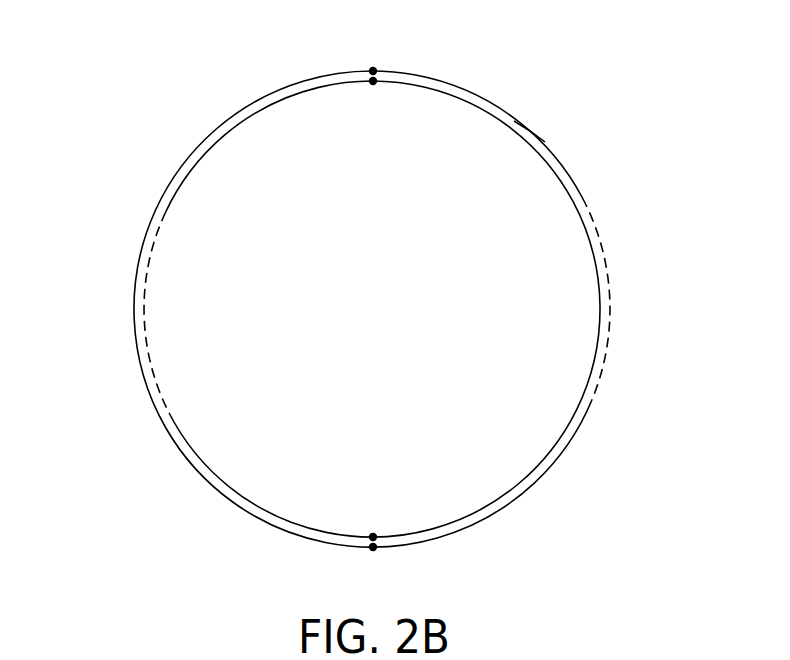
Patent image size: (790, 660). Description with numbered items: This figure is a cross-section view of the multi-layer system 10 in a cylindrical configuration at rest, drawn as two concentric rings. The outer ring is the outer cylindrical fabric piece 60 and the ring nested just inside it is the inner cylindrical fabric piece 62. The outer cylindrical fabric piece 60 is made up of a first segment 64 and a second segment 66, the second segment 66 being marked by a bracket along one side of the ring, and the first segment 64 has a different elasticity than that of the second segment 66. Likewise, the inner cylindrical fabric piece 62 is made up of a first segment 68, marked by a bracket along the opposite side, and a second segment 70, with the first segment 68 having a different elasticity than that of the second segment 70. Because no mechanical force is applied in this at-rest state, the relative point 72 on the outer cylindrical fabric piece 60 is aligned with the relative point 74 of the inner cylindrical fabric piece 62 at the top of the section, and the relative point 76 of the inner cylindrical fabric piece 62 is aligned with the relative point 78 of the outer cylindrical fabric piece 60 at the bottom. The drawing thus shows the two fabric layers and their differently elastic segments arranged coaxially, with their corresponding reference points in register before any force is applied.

The multi-layer system 10 is at (132, 96).
The outer cylindrical fabric piece 60 is at (305, 77).
The inner cylindrical fabric piece 62 is at (295, 98).
The first segment 64 is at (230, 118).
The second segment 66 is at (627, 192).
The first segment 68 is at (193, 208).
The second segment 70 is at (531, 136).
The relative point 72 is at (373, 68).
The relative point 74 is at (373, 85).
The relative point 76 is at (373, 534).
The relative point 78 is at (373, 550).